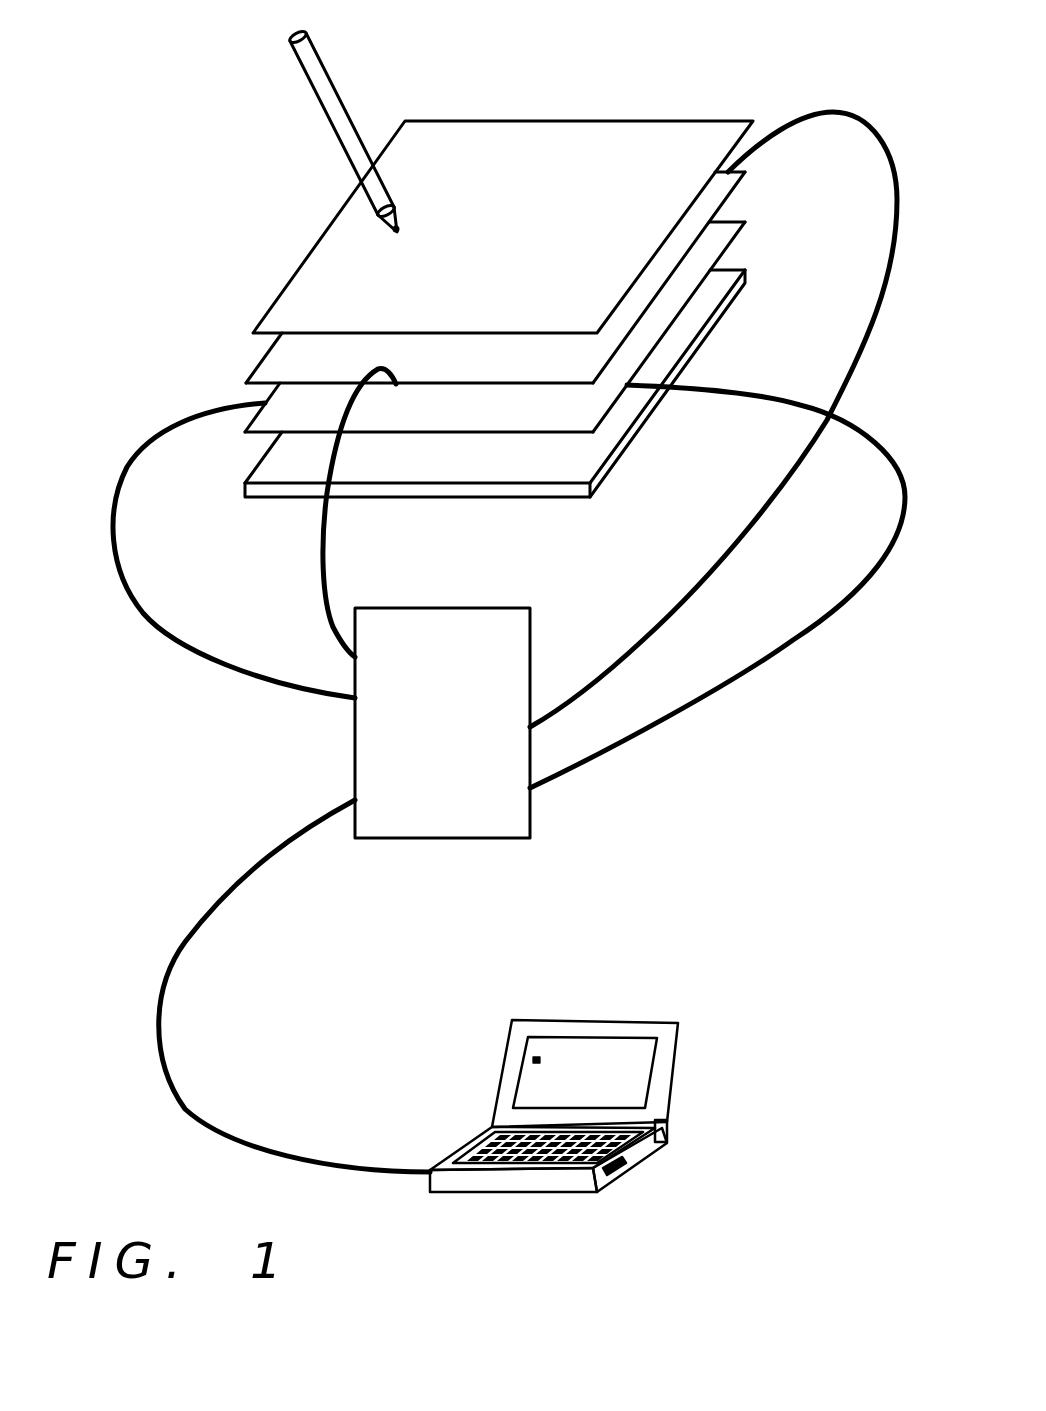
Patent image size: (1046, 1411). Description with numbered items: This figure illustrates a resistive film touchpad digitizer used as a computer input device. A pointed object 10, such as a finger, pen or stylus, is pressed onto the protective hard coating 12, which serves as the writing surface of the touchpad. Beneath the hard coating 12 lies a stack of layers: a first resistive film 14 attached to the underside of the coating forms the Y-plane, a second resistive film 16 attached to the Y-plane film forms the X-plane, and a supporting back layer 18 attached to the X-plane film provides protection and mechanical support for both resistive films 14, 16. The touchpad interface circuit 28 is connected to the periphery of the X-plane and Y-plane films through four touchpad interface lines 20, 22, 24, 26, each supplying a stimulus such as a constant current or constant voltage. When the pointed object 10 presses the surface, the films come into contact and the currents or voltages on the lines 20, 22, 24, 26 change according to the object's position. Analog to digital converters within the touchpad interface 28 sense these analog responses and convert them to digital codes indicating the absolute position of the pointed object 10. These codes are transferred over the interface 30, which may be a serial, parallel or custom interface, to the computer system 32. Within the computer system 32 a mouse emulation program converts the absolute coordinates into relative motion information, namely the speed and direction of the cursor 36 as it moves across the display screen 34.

The pointed object 10 is at (335, 105).
The protective hard coating 12 is at (332, 236).
The Y-plane resistive film 14 is at (278, 353).
The X-plane resistive film 16 is at (728, 231).
The supporting back layer 18 is at (603, 478).
The touchpad interface line 20 is at (320, 563).
The touchpad interface line 22 is at (893, 155).
The touchpad interface line 24 is at (140, 450).
The touchpad interface line 26 is at (753, 398).
The touchpad interface circuit 28 is at (530, 807).
The interface 30 is at (229, 880).
The computer system 32 is at (430, 1193).
The display screen 34 is at (527, 1060).
The cursor 36 is at (540, 1058).